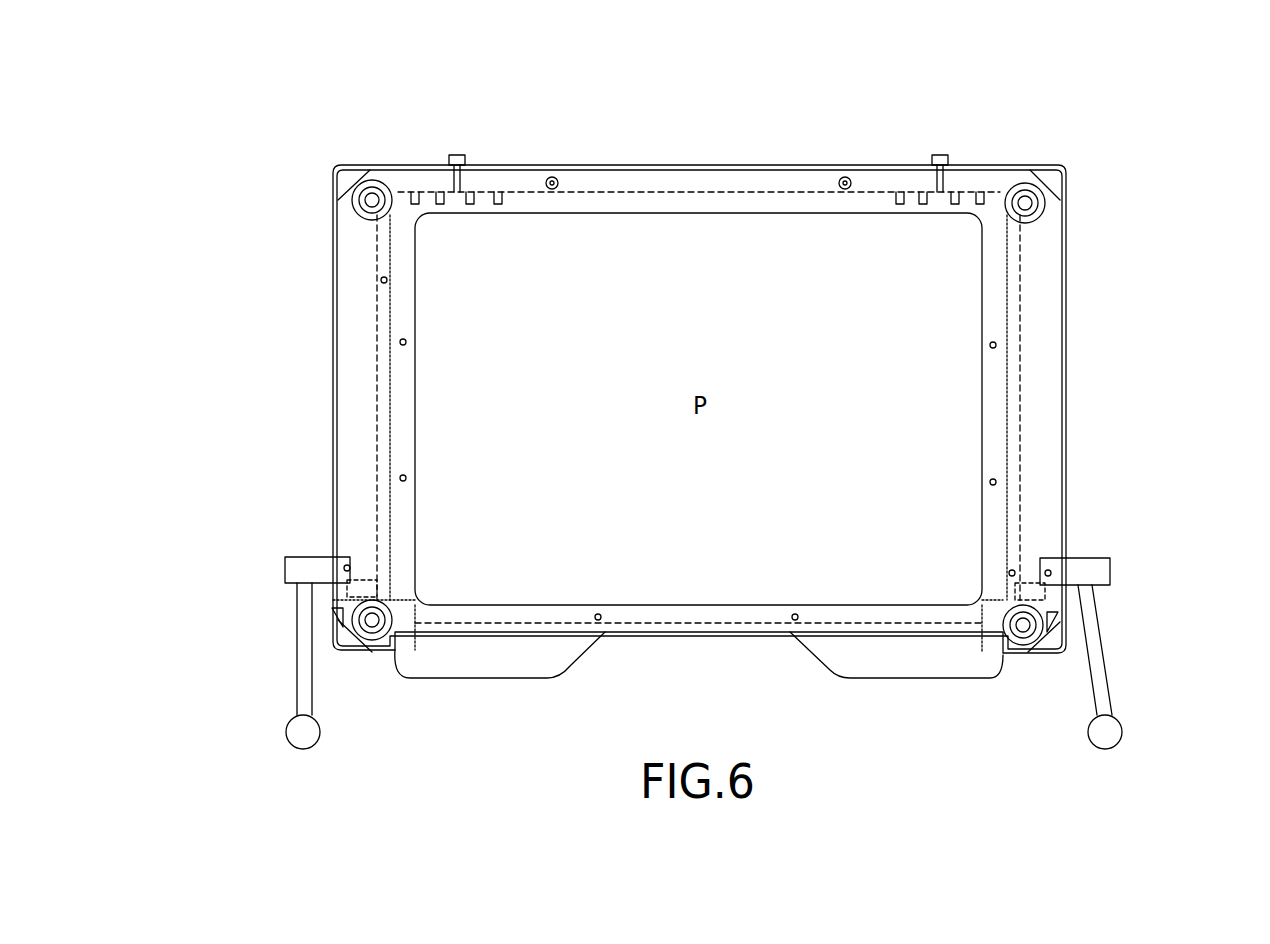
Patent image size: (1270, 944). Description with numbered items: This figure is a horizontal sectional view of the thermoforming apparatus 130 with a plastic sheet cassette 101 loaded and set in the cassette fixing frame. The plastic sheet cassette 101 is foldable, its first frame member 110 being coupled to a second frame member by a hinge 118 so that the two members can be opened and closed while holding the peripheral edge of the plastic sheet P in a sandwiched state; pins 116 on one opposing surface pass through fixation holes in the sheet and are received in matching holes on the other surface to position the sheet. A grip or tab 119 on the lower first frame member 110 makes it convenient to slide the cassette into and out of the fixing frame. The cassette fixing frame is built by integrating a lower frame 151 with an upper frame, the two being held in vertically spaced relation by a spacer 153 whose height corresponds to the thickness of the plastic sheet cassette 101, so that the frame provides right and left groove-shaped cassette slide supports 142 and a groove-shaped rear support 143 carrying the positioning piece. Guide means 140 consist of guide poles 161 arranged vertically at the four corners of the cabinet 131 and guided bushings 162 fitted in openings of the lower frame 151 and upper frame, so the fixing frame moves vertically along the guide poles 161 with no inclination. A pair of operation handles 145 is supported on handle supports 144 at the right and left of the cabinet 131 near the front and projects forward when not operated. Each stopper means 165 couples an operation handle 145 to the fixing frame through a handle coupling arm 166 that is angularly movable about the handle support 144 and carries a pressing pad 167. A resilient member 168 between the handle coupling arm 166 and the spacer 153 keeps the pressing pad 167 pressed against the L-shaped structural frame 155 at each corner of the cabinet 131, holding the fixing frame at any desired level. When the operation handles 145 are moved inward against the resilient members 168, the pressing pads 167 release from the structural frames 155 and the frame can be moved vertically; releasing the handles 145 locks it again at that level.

The plastic sheet cassette 101 is at (578, 185).
The first frame member 110 is at (699, 212).
The pins 116 is at (598, 203).
The hinge 118 is at (455, 157).
The grip or tab 119 is at (518, 650).
The thermoforming apparatus 130 is at (296, 192).
The cabinet 131 is at (333, 270).
The guide means 140 is at (766, 473).
The cassette slide supports 142 is at (357, 462).
The rear support 143 is at (548, 180).
The handle supports 144 is at (1050, 574).
The operation handles 145 is at (300, 676).
The lower frame 151 is at (357, 343).
The spacer 153 is at (380, 390).
The structural frame 155 is at (328, 627).
The guide poles 161 is at (395, 698).
The guided bushings 162 is at (1025, 193).
The stopper means 165 is at (678, 567).
The handle coupling arm 166 is at (325, 562).
The pressing pad 167 is at (335, 612).
The resilient member 168 is at (348, 590).